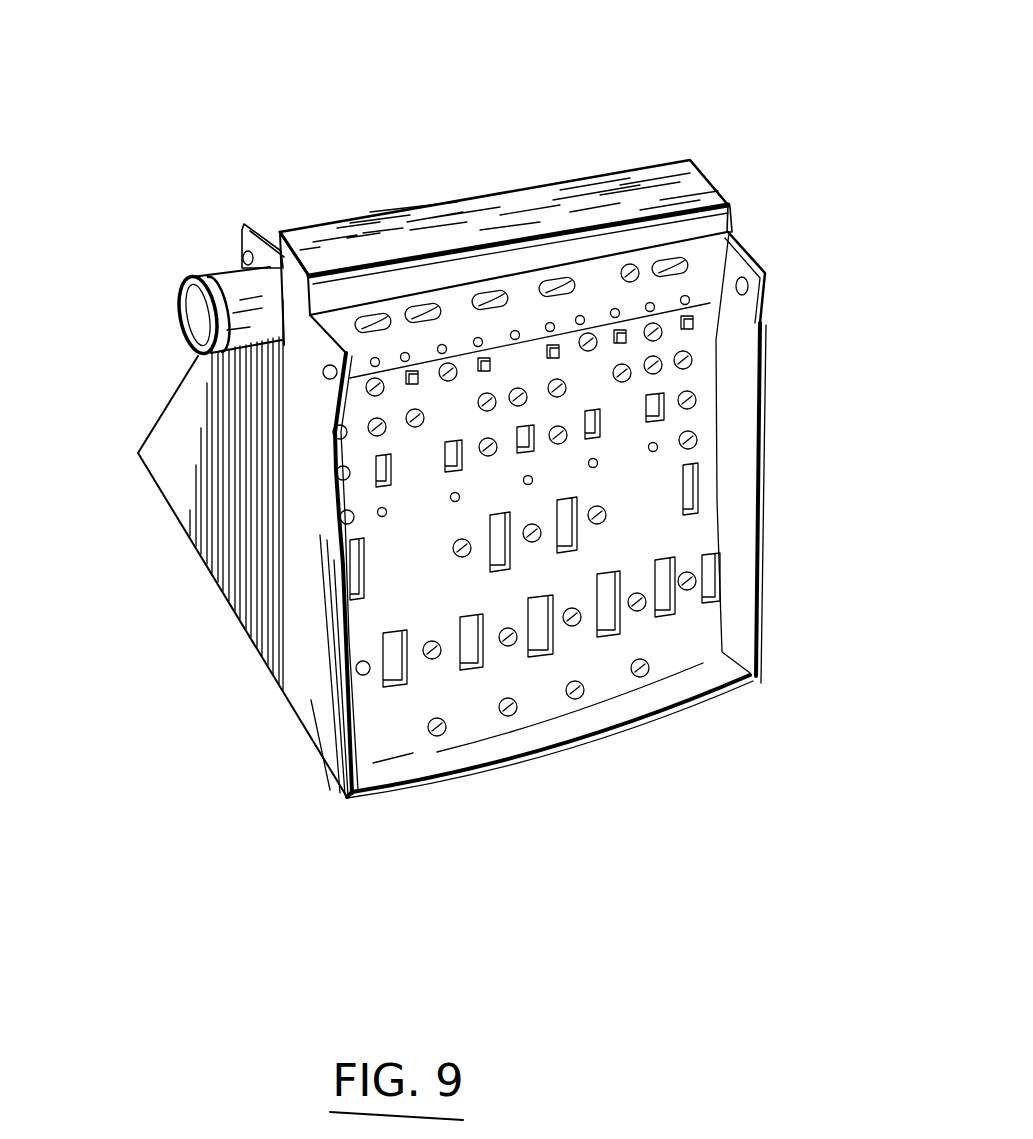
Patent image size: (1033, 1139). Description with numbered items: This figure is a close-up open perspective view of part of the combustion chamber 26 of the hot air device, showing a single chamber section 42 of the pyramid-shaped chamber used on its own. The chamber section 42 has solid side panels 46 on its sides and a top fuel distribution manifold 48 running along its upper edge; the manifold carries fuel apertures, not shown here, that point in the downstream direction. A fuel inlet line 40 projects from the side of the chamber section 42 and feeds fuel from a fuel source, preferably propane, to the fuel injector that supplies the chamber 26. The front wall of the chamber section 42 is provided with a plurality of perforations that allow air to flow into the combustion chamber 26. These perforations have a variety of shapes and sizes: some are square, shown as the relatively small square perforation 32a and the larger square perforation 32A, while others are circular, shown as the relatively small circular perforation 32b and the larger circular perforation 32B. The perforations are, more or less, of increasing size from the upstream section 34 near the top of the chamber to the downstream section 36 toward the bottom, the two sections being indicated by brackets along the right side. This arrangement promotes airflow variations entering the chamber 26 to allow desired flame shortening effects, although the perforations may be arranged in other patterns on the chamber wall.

The combustion chamber 26 is at (283, 155).
The fuel inlet line 40 is at (193, 306).
The first chamber section 42 is at (598, 165).
The top fuel distribution manifold 48 is at (460, 216).
The solid side panels 46 is at (745, 245).
The upstream section 34 is at (824, 236).
The downstream section 36 is at (830, 668).
The small square perforation 32a is at (377, 472).
The small circular perforation 32b is at (377, 427).
The large square perforation 32A is at (555, 652).
The large circular perforation 32B is at (650, 672).